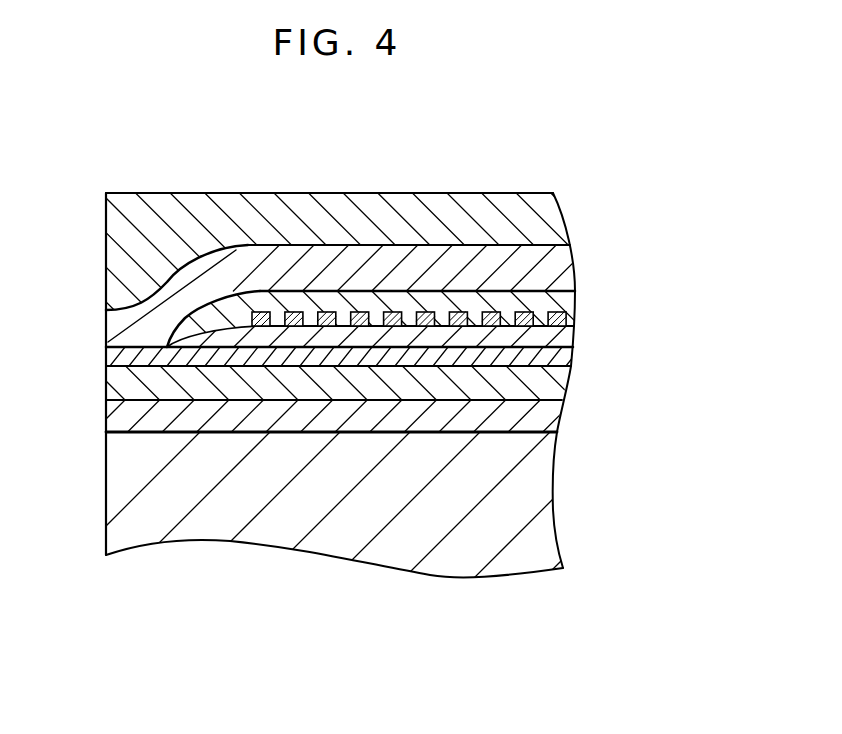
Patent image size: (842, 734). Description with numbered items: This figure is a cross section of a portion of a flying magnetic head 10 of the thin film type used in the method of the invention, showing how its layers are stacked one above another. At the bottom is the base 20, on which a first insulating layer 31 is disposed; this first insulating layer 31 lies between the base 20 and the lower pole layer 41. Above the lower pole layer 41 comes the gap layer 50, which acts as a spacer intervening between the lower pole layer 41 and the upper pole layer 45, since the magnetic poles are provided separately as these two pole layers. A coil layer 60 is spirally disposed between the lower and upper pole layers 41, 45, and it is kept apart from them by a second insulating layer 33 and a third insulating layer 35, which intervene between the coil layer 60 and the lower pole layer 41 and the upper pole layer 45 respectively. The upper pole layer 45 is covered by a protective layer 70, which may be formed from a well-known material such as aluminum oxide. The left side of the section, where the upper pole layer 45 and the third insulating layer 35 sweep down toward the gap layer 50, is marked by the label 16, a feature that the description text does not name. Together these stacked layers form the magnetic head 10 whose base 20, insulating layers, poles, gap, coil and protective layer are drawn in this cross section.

The flying magnetic head 10 is at (203, 567).
The air bearing surface side / head end 16 is at (106, 256).
The base 20 is at (457, 558).
The first insulating layer 31 is at (555, 416).
The second insulating layer 33 is at (560, 338).
The third insulating layer 35 is at (566, 300).
The lower pole layer 41 is at (560, 380).
The upper pole layer 45 is at (565, 268).
The gap layer 50 is at (106, 357).
The coil layer 60 is at (246, 296).
The protective layer 70 is at (510, 203).